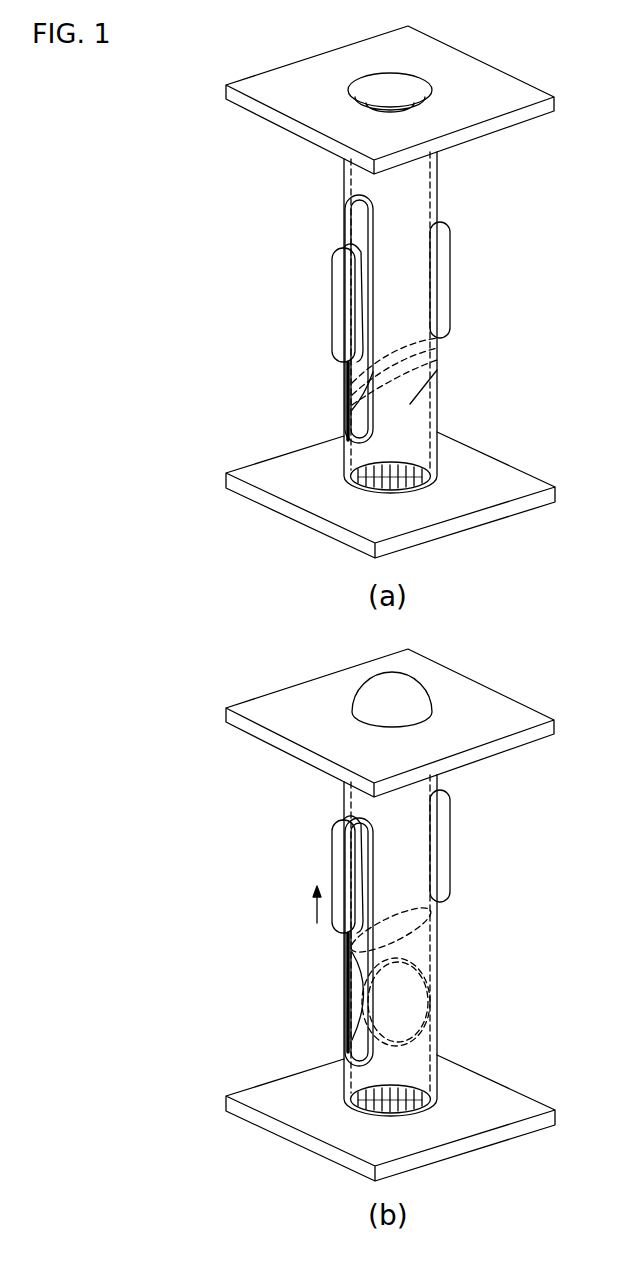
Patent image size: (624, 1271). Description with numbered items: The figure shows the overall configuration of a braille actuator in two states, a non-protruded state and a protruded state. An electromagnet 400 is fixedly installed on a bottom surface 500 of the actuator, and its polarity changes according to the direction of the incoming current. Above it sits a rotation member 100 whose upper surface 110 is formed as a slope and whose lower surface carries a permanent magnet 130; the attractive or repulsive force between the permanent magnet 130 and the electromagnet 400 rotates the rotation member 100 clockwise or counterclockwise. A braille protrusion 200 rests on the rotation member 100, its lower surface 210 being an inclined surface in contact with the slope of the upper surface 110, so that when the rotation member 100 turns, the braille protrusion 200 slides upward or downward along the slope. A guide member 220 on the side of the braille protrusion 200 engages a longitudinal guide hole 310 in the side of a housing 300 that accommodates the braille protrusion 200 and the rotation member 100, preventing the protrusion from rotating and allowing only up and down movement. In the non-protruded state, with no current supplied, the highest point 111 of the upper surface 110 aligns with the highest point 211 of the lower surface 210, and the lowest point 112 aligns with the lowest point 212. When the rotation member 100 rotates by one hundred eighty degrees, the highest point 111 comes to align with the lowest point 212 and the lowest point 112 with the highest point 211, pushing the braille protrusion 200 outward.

The rotation member 100 is at (412, 404).
The upper surface 110 is at (400, 989).
The highest point 111 is at (425, 348).
The lowest point 112 is at (352, 401).
The permanent magnet 130 is at (430, 498).
The braille protrusion 200 is at (405, 198).
The lower surface 210 is at (400, 936).
The highest point 211 is at (437, 346).
The lowest point 212 is at (348, 382).
The guide member 220 is at (345, 297).
The housing 300 is at (344, 183).
The guide hole 310 is at (352, 1053).
The electromagnet 400 is at (348, 491).
The bottom surface 500 is at (505, 478).